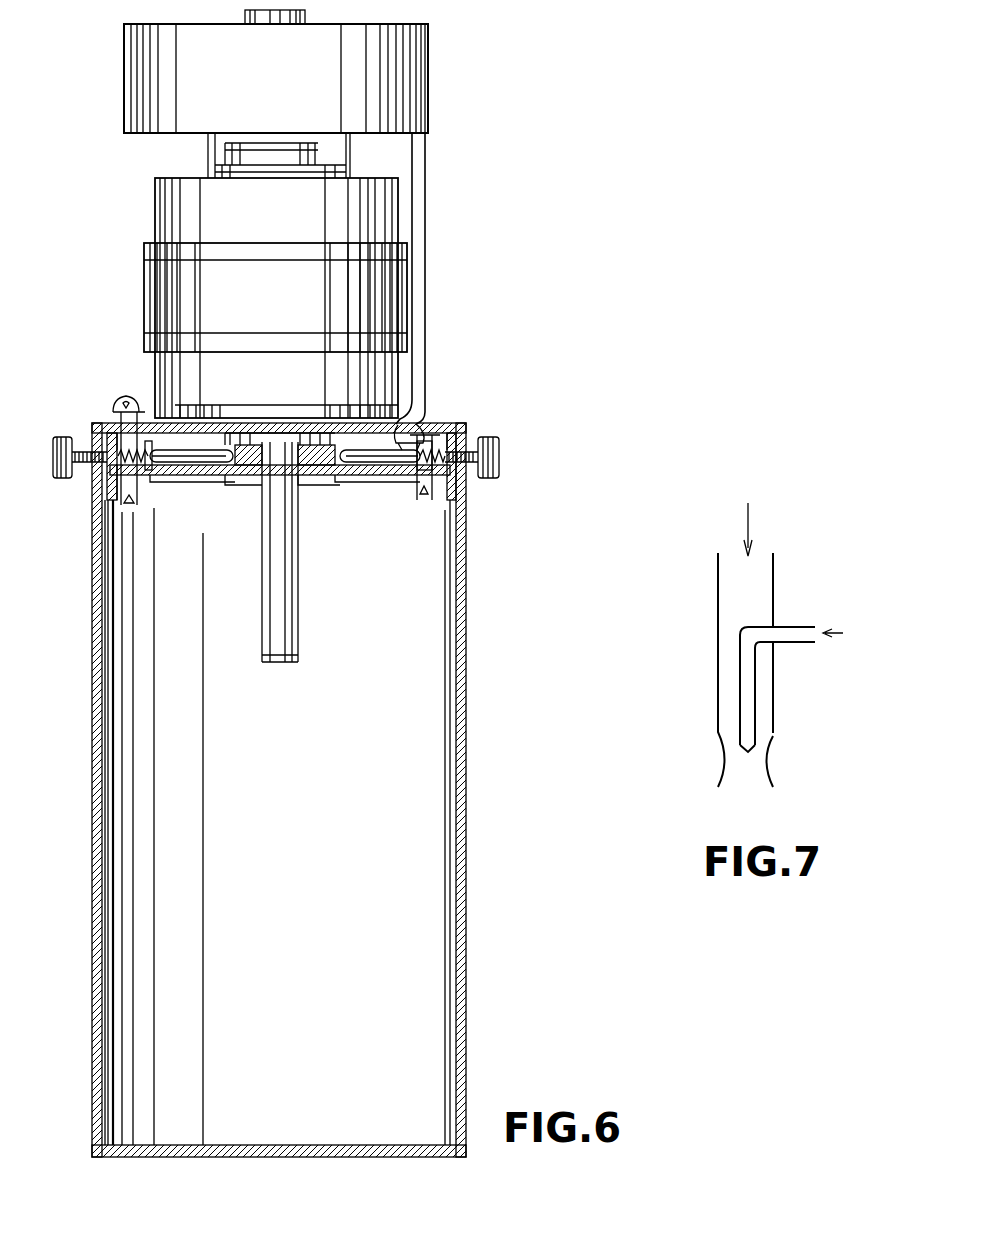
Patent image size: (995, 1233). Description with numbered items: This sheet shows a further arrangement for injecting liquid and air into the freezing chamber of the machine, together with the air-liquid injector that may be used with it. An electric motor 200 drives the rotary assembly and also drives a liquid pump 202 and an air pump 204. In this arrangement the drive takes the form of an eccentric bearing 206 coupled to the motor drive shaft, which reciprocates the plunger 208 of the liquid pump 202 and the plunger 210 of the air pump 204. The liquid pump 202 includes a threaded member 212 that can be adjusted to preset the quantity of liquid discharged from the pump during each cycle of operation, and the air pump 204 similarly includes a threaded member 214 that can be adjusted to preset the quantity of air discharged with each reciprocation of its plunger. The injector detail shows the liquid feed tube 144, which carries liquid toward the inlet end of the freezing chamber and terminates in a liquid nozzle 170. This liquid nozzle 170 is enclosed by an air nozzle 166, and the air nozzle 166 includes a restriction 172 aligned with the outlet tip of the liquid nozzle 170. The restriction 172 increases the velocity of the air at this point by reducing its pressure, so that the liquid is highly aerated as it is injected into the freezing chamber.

In FIG. 6, the electric motor 200 is at (395, 301).
In FIG. 6, the liquid pump 202 is at (440, 435).
In FIG. 6, the air pump 204 is at (102, 408).
In FIG. 6, the eccentric bearing 206 is at (320, 476).
In FIG. 6, the plunger 208 is at (362, 430).
In FIG. 6, the plunger 210 is at (218, 440).
In FIG. 6, the threaded member 212 is at (498, 449).
In FIG. 6, the threaded member 214 is at (66, 440).
In FIG. 7, the liquid feed tube 144 is at (797, 627).
In FIG. 7, the air nozzle 166 is at (776, 689).
In FIG. 7, the liquid nozzle 170 is at (750, 738).
In FIG. 7, the restriction 172 is at (768, 766).